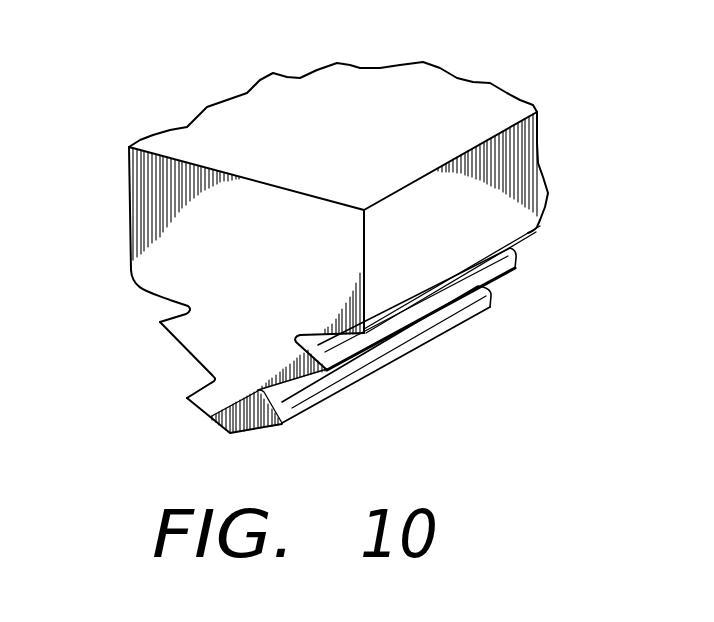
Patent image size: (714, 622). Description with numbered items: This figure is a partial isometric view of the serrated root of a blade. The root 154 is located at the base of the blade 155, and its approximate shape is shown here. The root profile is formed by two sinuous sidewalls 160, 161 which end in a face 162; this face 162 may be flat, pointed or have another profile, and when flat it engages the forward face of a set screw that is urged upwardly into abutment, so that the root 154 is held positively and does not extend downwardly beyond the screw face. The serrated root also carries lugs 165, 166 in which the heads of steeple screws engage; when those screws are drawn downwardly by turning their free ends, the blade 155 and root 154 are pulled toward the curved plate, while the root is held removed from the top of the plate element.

The blade 155 is at (290, 255).
The root 154 is at (290, 331).
The sinuous sidewall 160 is at (183, 357).
The lug 166 is at (160, 302).
The face 162 is at (228, 433).
The sinuous sidewall 161 is at (283, 397).
The lug 165 is at (320, 343).